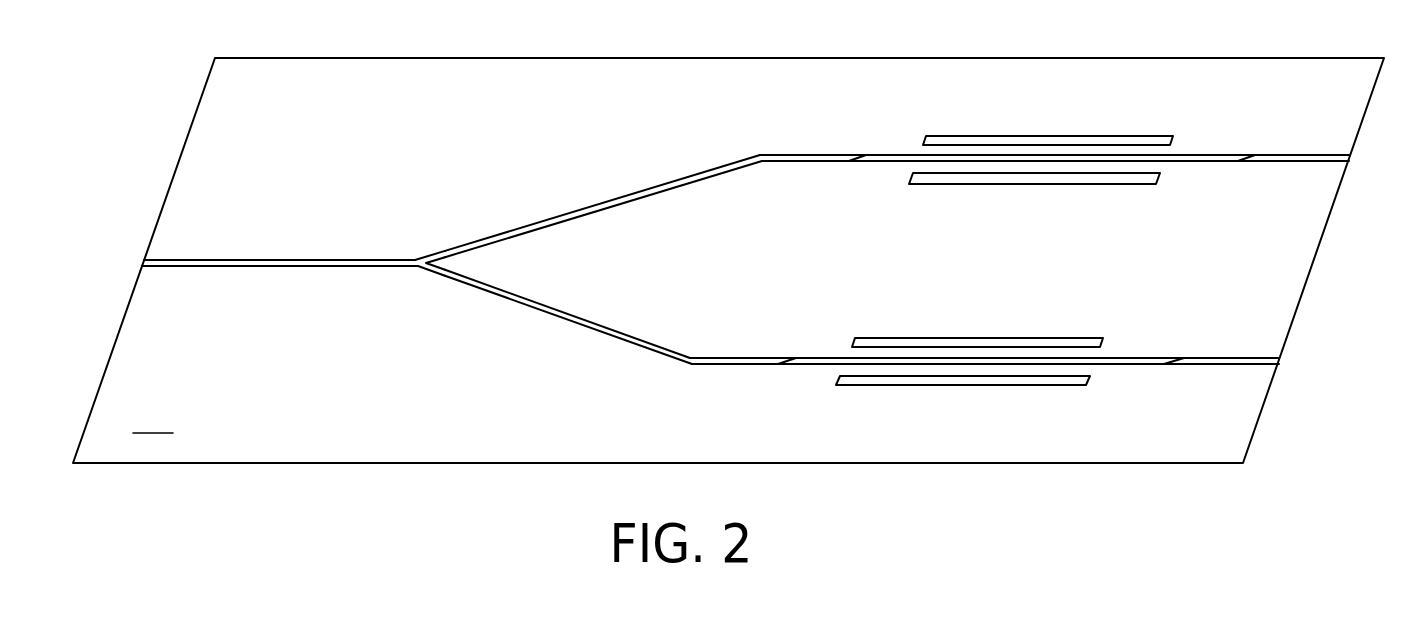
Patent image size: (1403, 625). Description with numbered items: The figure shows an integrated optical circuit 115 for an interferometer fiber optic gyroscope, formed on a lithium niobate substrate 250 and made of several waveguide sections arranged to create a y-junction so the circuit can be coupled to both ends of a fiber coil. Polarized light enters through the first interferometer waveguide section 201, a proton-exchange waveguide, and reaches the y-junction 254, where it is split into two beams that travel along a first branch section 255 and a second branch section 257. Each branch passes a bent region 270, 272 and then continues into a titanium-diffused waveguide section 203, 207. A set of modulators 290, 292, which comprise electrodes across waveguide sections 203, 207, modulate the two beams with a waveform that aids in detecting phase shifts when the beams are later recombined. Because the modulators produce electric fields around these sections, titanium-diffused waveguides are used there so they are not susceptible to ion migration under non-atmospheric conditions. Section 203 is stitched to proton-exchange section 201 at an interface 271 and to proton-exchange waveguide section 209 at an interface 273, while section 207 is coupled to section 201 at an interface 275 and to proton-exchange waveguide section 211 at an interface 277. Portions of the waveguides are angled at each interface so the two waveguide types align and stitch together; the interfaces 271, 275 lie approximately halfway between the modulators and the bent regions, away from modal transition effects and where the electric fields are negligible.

The substrate 250 is at (208, 185).
The integrated optical circuit 115 is at (153, 419).
The first interferometer waveguide section 201 is at (291, 268).
The y-junction 254 is at (418, 269).
The first branch section 255 is at (580, 208).
The second branch section 257 is at (518, 305).
The bent region 270 is at (760, 137).
The interface 271 is at (842, 182).
The titanium-diffused waveguide section 203 is at (890, 154).
The modulator 290 is at (1028, 118).
The interface 273 is at (1228, 183).
The proton-exchange waveguide section 209 is at (1278, 155).
The bent region 272 is at (685, 383).
The interface 275 is at (785, 335).
The titanium-diffused waveguide section 207 is at (820, 366).
The modulator 292 is at (950, 405).
The interface 277 is at (1172, 333).
The proton-exchange waveguide section 211 is at (1210, 367).